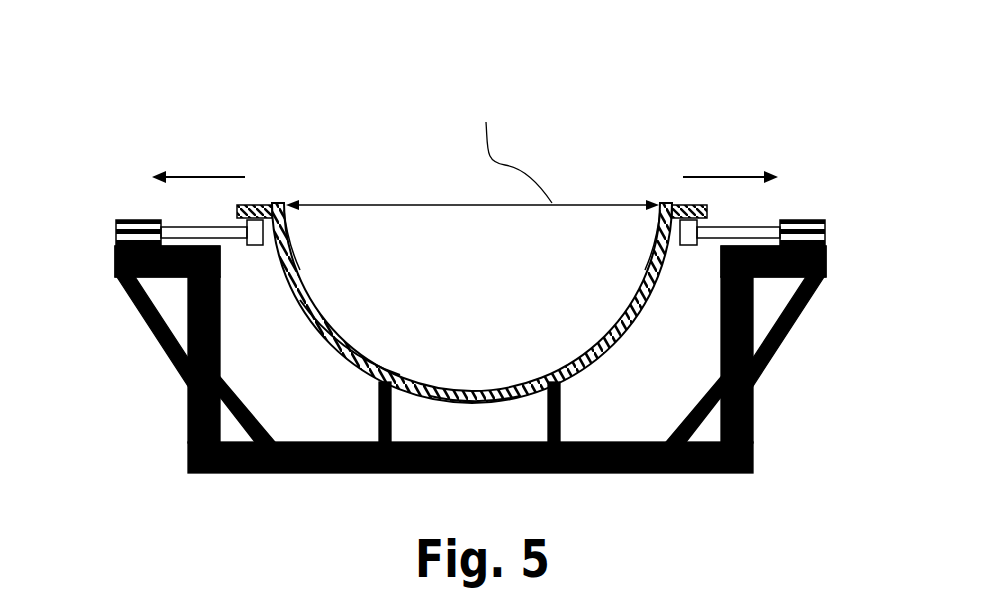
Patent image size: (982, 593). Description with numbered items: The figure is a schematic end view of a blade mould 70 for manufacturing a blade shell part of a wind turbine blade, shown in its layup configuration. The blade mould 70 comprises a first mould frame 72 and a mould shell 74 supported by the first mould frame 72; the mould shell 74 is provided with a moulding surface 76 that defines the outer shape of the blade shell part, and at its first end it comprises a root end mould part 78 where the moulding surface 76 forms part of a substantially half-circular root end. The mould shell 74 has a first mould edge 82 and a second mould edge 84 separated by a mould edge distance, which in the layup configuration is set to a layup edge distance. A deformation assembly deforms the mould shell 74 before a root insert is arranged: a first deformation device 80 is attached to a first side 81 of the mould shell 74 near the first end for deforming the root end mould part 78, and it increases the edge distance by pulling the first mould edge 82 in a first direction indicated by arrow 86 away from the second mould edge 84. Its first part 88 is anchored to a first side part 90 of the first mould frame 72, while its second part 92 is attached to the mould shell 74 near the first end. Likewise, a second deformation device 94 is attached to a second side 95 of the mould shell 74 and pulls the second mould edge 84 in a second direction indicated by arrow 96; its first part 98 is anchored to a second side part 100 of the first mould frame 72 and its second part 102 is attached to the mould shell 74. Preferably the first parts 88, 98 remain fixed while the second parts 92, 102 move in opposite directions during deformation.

The blade mould 70 is at (434, 96).
The first mould frame 72 is at (752, 388).
The mould shell 74 is at (628, 313).
The moulding surface 76 is at (390, 372).
The root end mould part 78 is at (478, 392).
The first deformation device 80 is at (148, 216).
The first side 81 is at (298, 246).
The first mould edge 82 is at (300, 200).
The second mould edge 84 is at (655, 204).
The arrow 86 is at (183, 177).
The first part 88 is at (120, 222).
The first side part 90 is at (118, 265).
The second part 92 is at (258, 247).
The second deformation device 94 is at (779, 223).
The second side 95 is at (655, 238).
The arrow 96 is at (740, 176).
The first part 98 is at (825, 232).
The second side part 100 is at (826, 275).
The second part 102 is at (695, 246).